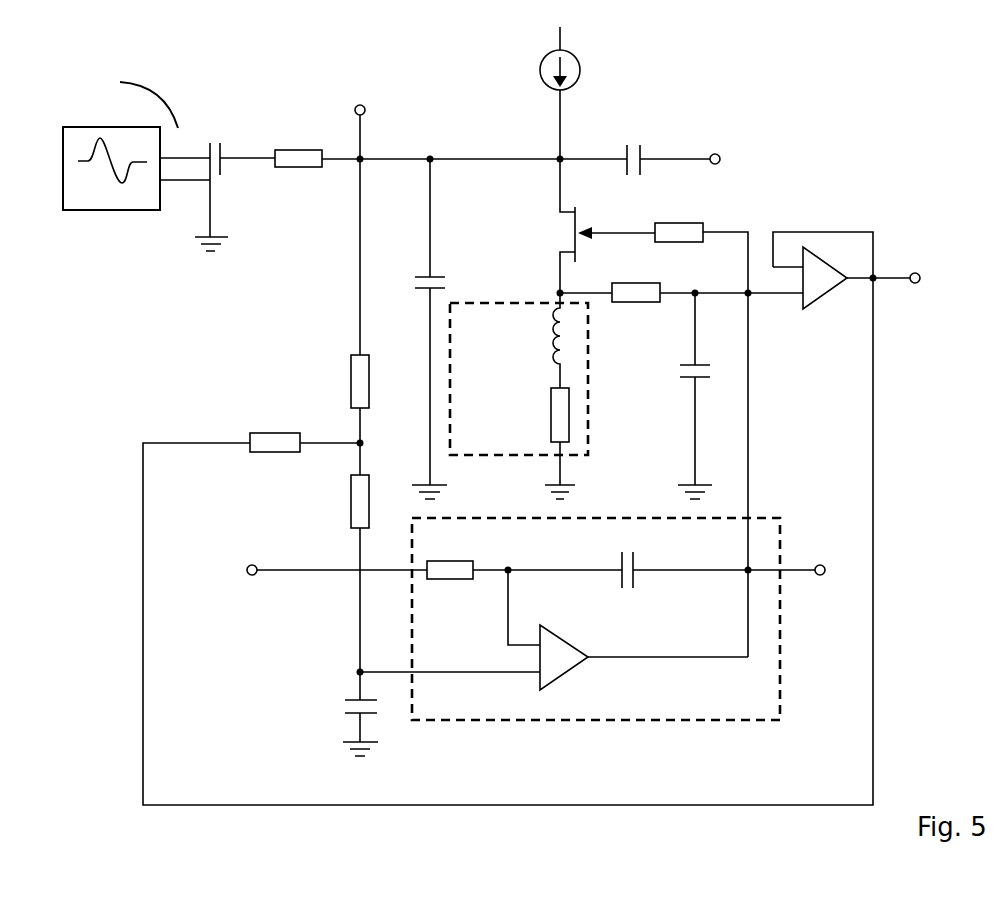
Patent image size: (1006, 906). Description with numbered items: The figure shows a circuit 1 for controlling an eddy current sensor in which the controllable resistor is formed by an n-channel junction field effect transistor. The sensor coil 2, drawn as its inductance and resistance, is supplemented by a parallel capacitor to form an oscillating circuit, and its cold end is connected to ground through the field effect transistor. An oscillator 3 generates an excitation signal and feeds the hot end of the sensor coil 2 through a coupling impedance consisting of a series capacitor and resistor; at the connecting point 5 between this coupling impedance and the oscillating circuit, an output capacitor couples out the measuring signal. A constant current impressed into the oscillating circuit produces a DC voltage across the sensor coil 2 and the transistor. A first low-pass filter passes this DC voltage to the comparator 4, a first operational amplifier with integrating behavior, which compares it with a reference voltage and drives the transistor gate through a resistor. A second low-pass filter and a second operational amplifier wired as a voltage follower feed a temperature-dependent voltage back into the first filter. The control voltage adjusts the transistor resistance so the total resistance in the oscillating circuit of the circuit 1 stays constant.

The circuit 1 is at (846, 101).
The sensor coil 2 is at (590, 380).
The oscillator 3 is at (102, 232).
The comparator 4 is at (507, 619).
The connecting point 5 is at (518, 138).